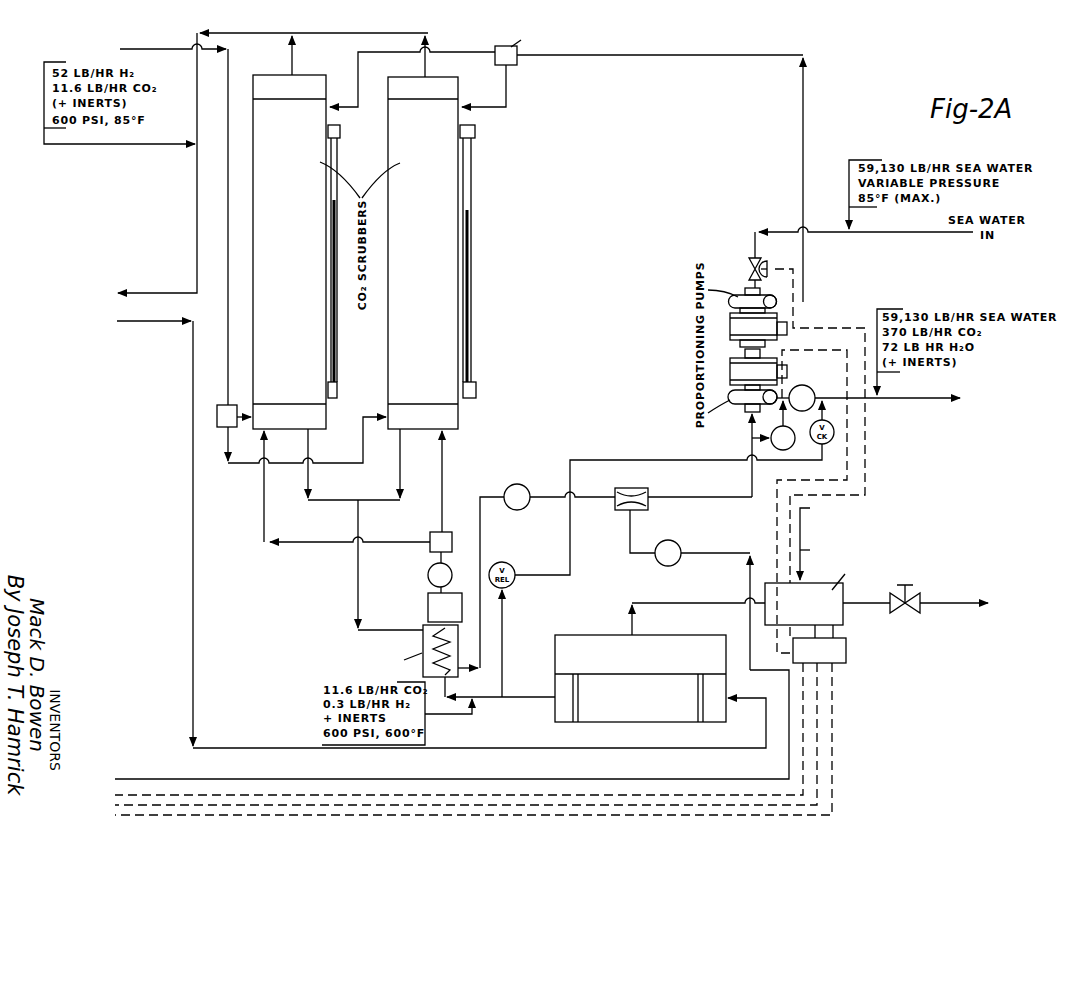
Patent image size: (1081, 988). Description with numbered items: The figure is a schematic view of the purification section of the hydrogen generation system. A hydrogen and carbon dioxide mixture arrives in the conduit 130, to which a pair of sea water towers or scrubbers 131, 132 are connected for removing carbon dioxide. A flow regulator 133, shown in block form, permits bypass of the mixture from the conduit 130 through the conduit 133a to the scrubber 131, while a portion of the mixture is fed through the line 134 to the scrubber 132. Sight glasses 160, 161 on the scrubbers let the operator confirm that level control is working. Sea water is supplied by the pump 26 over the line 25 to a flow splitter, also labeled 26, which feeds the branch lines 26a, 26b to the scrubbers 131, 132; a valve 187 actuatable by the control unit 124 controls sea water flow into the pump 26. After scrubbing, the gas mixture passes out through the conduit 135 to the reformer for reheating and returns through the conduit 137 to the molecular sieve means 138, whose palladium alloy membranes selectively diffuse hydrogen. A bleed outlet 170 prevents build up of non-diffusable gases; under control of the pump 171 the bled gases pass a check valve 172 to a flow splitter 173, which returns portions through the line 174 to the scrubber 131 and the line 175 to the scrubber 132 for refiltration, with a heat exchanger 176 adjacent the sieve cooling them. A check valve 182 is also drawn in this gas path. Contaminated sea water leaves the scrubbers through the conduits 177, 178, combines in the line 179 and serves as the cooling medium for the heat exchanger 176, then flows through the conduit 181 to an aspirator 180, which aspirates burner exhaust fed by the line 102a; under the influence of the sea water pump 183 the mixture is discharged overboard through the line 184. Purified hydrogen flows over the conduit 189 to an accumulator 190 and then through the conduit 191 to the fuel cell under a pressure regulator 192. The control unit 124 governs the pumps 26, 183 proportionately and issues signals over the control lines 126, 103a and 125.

The conduit 130 is at (170, 48).
The conduit 135 is at (322, 36).
The conduit 137 is at (150, 323).
The sea water scrubber 131 is at (300, 260).
The sea water scrubber 132 is at (436, 260).
The sight glass 160 is at (338, 351).
The sight glass 161 is at (477, 321).
The sea water pump and flow splitter 26 is at (497, 48).
The branch line 26a is at (392, 52).
The branch line 26b is at (510, 104).
The sea water line 25 is at (692, 57).
The flow regulator 133 is at (223, 428).
The bypass conduit 133a is at (245, 411).
The line 134 is at (241, 466).
The conduit 177 is at (307, 439).
The conduit 178 is at (400, 451).
The line 179 is at (357, 518).
The line 174 is at (319, 545).
The line 175 is at (446, 523).
The flow splitter 173 is at (436, 532).
The check valve 172 is at (449, 572).
The pump 171 is at (427, 598).
The heat exchanger 176 is at (423, 642).
The conduit 181 is at (481, 642).
The check valve 182 is at (521, 482).
The bleed outlet 170 is at (540, 689).
The molecular sieve means 138 is at (706, 652).
The conduit 189 is at (704, 603).
The aspirator 180 is at (649, 509).
The line 102a is at (151, 778).
The control line 126 is at (235, 792).
The control line 103a is at (255, 805).
The line 125 is at (353, 808).
The sea water pump 183 is at (745, 403).
The discharge line 184 is at (842, 396).
The valve 187 is at (773, 263).
The accumulator 190 is at (836, 600).
The conduit 191 is at (858, 606).
The pressure regulator 192 is at (915, 595).
The control unit 124 is at (838, 657).